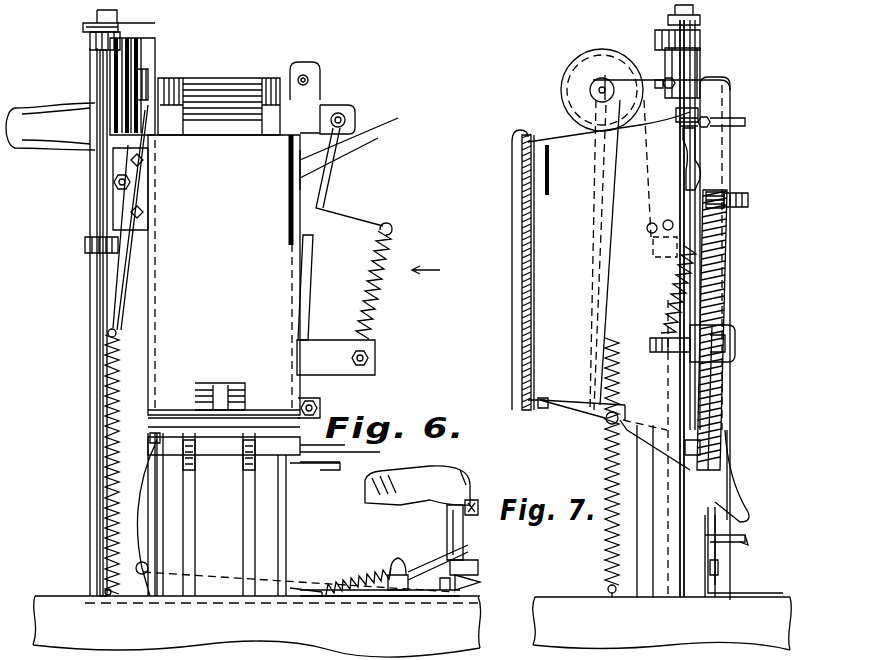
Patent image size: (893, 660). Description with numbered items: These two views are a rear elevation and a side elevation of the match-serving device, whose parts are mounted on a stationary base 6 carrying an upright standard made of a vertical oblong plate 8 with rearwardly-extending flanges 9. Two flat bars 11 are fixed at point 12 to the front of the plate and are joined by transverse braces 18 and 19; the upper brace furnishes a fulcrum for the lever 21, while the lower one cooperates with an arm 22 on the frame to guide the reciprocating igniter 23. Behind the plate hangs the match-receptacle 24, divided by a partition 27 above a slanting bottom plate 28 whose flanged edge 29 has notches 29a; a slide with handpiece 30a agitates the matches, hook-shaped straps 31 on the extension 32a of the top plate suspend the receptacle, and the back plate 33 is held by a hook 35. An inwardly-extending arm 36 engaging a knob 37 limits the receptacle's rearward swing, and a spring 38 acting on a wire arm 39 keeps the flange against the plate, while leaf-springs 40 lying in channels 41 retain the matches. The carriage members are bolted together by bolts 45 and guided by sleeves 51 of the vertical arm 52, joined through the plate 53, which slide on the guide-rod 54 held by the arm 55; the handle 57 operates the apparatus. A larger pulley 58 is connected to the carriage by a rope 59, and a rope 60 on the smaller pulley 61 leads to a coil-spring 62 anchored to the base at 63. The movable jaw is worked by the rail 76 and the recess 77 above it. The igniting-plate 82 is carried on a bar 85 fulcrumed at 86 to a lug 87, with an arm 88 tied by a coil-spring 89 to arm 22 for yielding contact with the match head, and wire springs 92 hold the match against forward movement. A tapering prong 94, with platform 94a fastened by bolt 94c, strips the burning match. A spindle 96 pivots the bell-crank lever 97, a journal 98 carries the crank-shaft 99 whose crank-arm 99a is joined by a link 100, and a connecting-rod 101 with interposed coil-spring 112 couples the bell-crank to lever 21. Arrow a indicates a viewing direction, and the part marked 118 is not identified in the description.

In FIG. 7, the stationary base 6 is at (662, 623).
In FIG. 6, the vertical oblong plate 8 is at (189, 514).
In FIG. 7, the vertical oblong plate 8 is at (722, 372).
In FIG. 7, the rearwardly-extending flanges 9 is at (643, 168).
In FIG. 7, the flat bars 11 is at (731, 413).
In FIG. 6, the securing point 12 is at (308, 70).
In FIG. 7, the securing point 12 is at (712, 80).
In FIG. 7, the upper transverse brace 18 is at (728, 208).
In FIG. 7, the lower transverse brace 19 is at (737, 342).
In FIG. 6, the lever 21 is at (138, 338).
In FIG. 6, the arm 22 is at (336, 357).
In FIG. 7, the arm 22 is at (680, 355).
In FIG. 6, the igniter 23 is at (349, 177).
In FIG. 7, the igniter 23 is at (732, 292).
In FIG. 6, the match-receptacle 24 is at (219, 107).
In FIG. 7, the match-receptacle 24 is at (522, 225).
In FIG. 7, the partition 27 is at (596, 215).
In FIG. 6, the bottom plate 28 is at (320, 404).
In FIG. 7, the bottom plate 28 is at (548, 408).
In FIG. 6, the flanged edge 29 is at (270, 446).
In FIG. 7, the flanged edge 29 is at (700, 448).
In FIG. 6, the notches 29a is at (150, 440).
In FIG. 6, the handpiece 30a is at (240, 380).
In FIG. 6, the hook-shaped straps 31 is at (170, 78).
In FIG. 6, the top plate extension 32a is at (216, 80).
In FIG. 6, the back plate 33 is at (224, 275).
In FIG. 7, the back plate 33 is at (532, 285).
In FIG. 6, the hook 35 is at (300, 185).
In FIG. 7, the hook 35 is at (520, 140).
In FIG. 6, the inwardly-extending arm 36 is at (319, 458).
In FIG. 7, the inwardly-extending arm 36 is at (583, 402).
In FIG. 7, the knob 37 is at (607, 425).
In FIG. 6, the spring 38 is at (428, 155).
In FIG. 7, the spring 38 is at (609, 143).
In FIG. 6, the wire arm 39 is at (353, 156).
In FIG. 7, the wire arm 39 is at (550, 183).
In FIG. 6, the leaf-springs 40 is at (196, 478).
In FIG. 6, the channels 41 is at (255, 518).
In FIG. 6, the bolts 45 is at (114, 180).
In FIG. 6, the sleeves 51 is at (90, 46).
In FIG. 7, the sleeves 51 is at (656, 40).
In FIG. 6, the vertical arm 52 is at (100, 70).
In FIG. 7, the vertical arm 52 is at (702, 57).
In FIG. 6, the intermediate plate 53 is at (114, 200).
In FIG. 6, the guide-rod 54 is at (90, 318).
In FIG. 7, the guide-rod 54 is at (692, 12).
In FIG. 6, the arm 55 is at (86, 30).
In FIG. 7, the arm 55 is at (668, 22).
In FIG. 6, the handle 57 is at (48, 104).
In FIG. 6, the larger pulley 58 is at (122, 45).
In FIG. 7, the larger pulley 58 is at (585, 62).
In FIG. 6, the rope 59 is at (108, 208).
In FIG. 6, the rope 60 is at (117, 275).
In FIG. 7, the rope 60 is at (597, 242).
In FIG. 6, the smaller pulley 61 is at (149, 72).
In FIG. 7, the smaller pulley 61 is at (603, 78).
In FIG. 6, the coil-spring 62 is at (104, 393).
In FIG. 7, the coil-spring 62 is at (604, 472).
In FIG. 6, the anchoring point 63 is at (100, 590).
In FIG. 7, the anchoring point 63 is at (607, 590).
In FIG. 7, the vertical rail 76 is at (700, 475).
In FIG. 7, the recess 77 is at (700, 172).
In FIG. 7, the igniting-plate 82 is at (722, 395).
In FIG. 6, the bar 85 is at (311, 262).
In FIG. 7, the bar 85 is at (750, 200).
In FIG. 6, the fulcrum 86 is at (332, 110).
In FIG. 7, the fulcrum 86 is at (682, 115).
In FIG. 6, the lug 87 is at (347, 118).
In FIG. 7, the lug 87 is at (712, 116).
In FIG. 6, the arm 88 is at (366, 217).
In FIG. 7, the arm 88 is at (655, 238).
In FIG. 6, the coil-spring 89 is at (378, 284).
In FIG. 7, the coil-spring 89 is at (683, 282).
In FIG. 7, the wire springs 92 is at (748, 508).
In FIG. 7, the prong 94 is at (710, 533).
In FIG. 7, the platform 94a is at (745, 540).
In FIG. 7, the bolt 94c is at (720, 565).
In FIG. 6, the spindle 96 is at (398, 558).
In FIG. 6, the bell-crank lever 97 is at (470, 578).
In FIG. 6, the journal 98 is at (447, 522).
In FIG. 6, the crank-shaft 99 is at (478, 507).
In FIG. 6, the crank-arm 99a is at (436, 592).
In FIG. 6, the link 100 is at (470, 563).
In FIG. 6, the connecting-rod 101 is at (298, 585).
In FIG. 6, the coil-spring 112 is at (355, 575).
In FIG. 6, the handle 118 is at (425, 470).
In FIG. 6, the arrow a is at (426, 262).